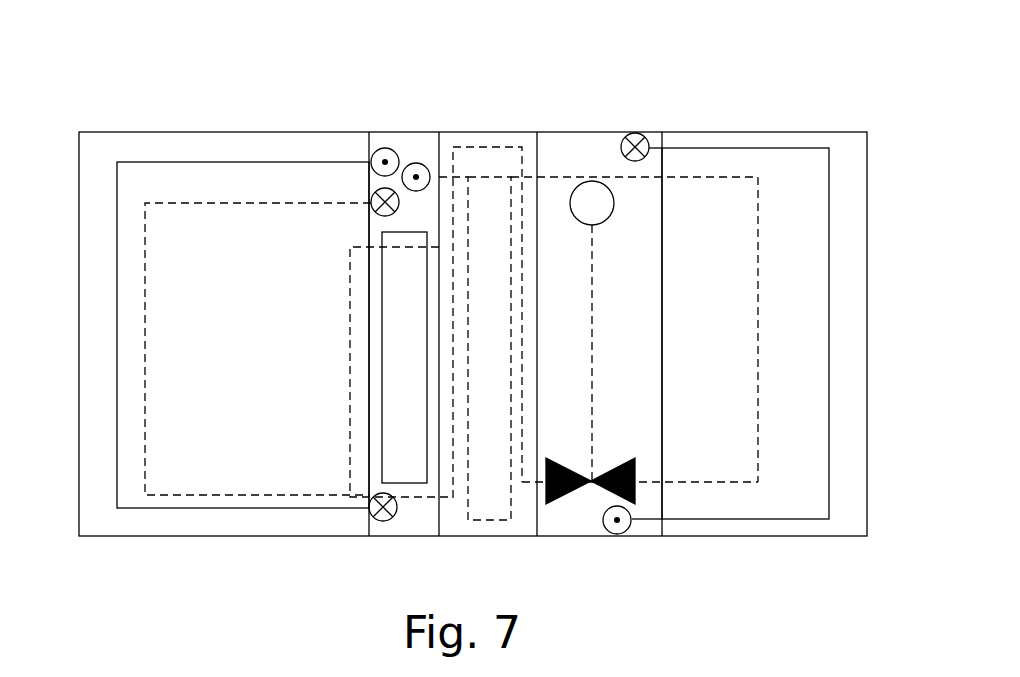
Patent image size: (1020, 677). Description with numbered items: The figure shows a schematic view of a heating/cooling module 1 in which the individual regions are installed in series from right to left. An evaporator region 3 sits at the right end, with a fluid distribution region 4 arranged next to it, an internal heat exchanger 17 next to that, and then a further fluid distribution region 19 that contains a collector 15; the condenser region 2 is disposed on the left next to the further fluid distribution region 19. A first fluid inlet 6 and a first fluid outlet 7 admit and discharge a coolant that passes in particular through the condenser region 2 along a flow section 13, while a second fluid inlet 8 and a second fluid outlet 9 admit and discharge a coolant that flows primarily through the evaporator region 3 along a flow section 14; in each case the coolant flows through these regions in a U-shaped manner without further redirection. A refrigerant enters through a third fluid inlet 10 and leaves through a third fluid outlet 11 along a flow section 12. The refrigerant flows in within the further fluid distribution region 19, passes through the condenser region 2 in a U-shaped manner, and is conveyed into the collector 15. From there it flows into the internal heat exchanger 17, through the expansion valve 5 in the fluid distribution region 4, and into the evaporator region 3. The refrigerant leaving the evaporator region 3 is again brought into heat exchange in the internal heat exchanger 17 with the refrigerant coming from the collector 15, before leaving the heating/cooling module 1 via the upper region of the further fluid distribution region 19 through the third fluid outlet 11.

The heating/cooling module 1 is at (480, 86).
The condenser region 2 is at (214, 132).
The evaporator region 3 is at (711, 132).
The fluid distribution region 4 is at (577, 132).
The expansion valve 5 is at (600, 488).
The first fluid inlet 6 is at (384, 521).
The first fluid outlet 7 is at (383, 157).
The second fluid inlet 8 is at (632, 138).
The second fluid outlet 9 is at (617, 523).
The third fluid inlet 10 is at (373, 192).
The third fluid outlet 11 is at (416, 175).
The flow section 12 is at (145, 311).
The flow section 13 is at (146, 162).
The flow section 14 is at (830, 363).
The collector 15 is at (400, 478).
The internal heat exchanger 17 is at (511, 132).
The further fluid distribution region 19 is at (392, 132).